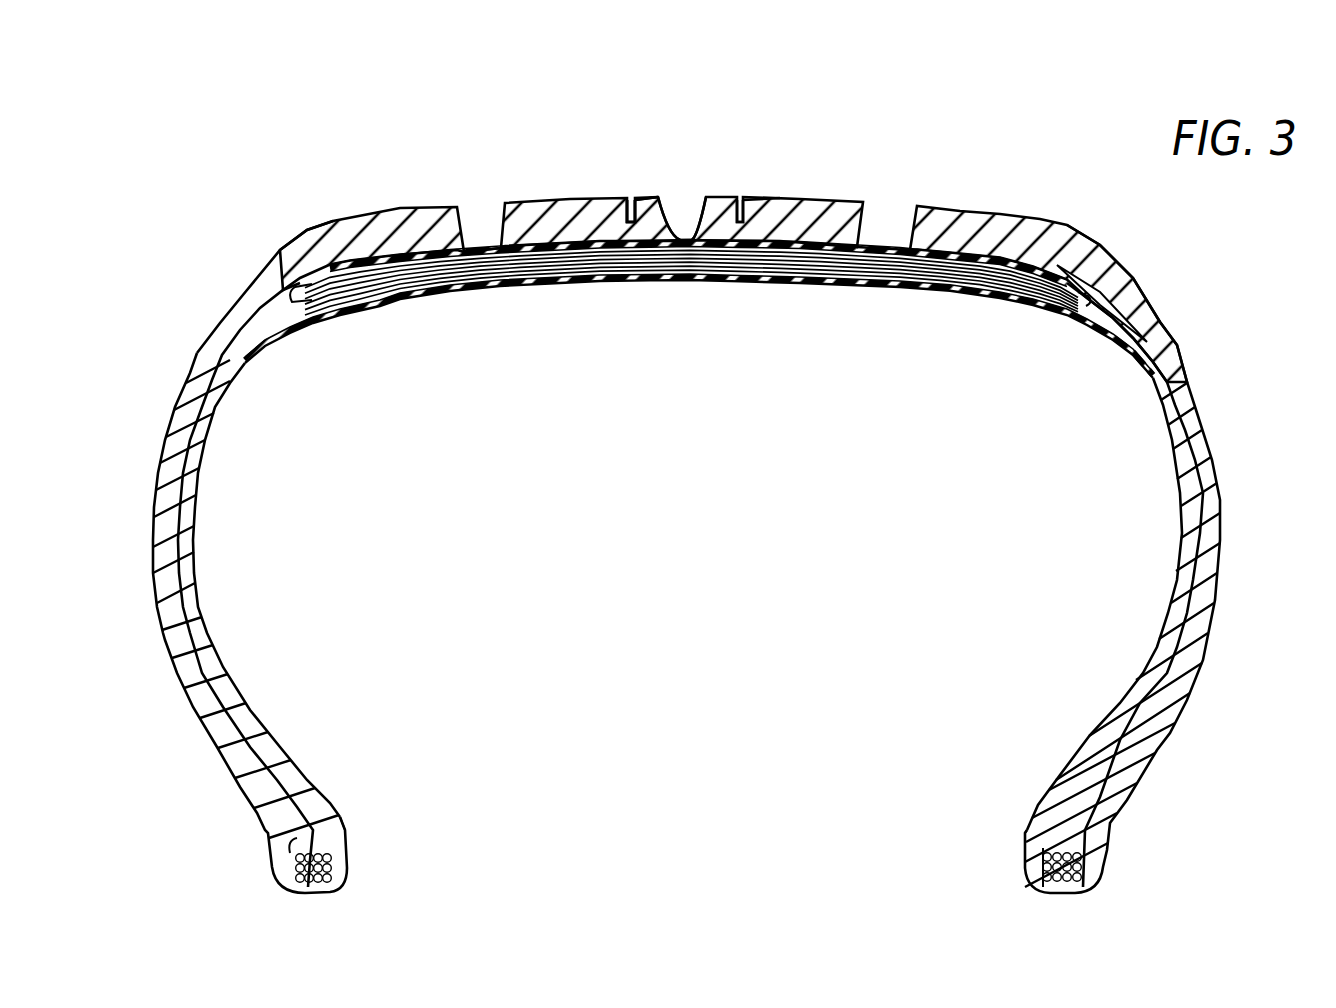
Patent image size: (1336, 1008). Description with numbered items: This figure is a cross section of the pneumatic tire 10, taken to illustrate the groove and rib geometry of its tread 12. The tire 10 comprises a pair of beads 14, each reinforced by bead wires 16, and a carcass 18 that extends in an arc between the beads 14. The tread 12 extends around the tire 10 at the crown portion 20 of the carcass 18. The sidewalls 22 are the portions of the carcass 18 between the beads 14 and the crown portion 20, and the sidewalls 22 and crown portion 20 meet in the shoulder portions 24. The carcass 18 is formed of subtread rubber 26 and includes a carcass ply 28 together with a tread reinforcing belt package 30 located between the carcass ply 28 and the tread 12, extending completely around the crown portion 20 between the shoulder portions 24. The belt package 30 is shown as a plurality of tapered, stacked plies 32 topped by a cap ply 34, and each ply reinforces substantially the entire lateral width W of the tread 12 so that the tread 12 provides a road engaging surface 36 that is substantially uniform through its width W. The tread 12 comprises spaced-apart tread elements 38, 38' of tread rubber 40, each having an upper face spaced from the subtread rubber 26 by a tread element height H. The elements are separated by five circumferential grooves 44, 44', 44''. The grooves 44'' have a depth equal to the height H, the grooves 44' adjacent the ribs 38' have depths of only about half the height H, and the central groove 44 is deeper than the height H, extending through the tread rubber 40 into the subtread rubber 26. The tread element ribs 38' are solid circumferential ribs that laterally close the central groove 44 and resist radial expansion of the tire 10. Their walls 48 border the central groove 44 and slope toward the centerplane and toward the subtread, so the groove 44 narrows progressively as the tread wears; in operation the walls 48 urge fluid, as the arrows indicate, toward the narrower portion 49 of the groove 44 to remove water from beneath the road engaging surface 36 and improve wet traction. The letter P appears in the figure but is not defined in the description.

The pneumatic tire 10 is at (205, 290).
The tread 12 is at (733, 239).
The beads 14 is at (353, 818).
The bead wires 16 is at (330, 864).
The carcass 18 is at (188, 497).
The crown portion 20 is at (700, 285).
The sidewalls 22 is at (200, 580).
The shoulder portions 24 is at (235, 378).
The subtread rubber 26 is at (1108, 322).
The carcass ply 28 is at (187, 700).
The tread reinforcing belt package 30 is at (842, 252).
The stacked plies 32 is at (925, 267).
The cap ply 34 is at (988, 272).
The road engaging surface 36 is at (1022, 212).
The tread elements 38 is at (827, 180).
The tread element ribs 38' is at (720, 186).
The tread rubber 40 is at (392, 225).
The central circumferential groove 44 is at (689, 168).
The circumferential grooves 44' is at (688, 159).
The circumferential grooves 44'' is at (682, 191).
The walls 48 is at (703, 218).
The narrower portion 49 is at (709, 215).
The tread element height H is at (683, 240).
The lateral width W is at (1067, 195).
The groove bottom point P is at (686, 238).